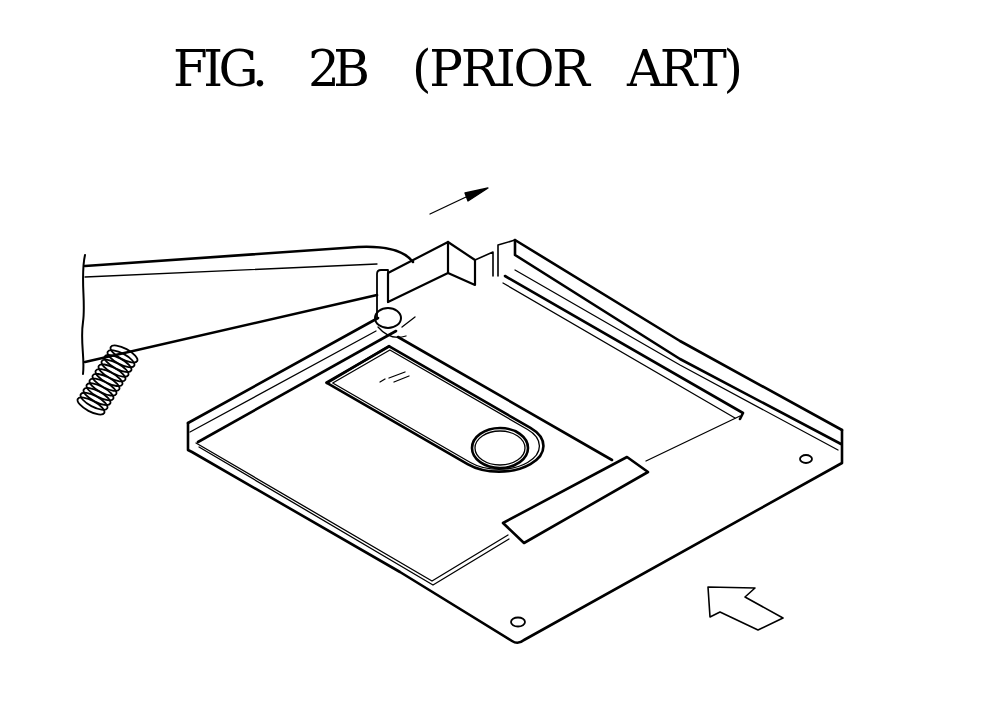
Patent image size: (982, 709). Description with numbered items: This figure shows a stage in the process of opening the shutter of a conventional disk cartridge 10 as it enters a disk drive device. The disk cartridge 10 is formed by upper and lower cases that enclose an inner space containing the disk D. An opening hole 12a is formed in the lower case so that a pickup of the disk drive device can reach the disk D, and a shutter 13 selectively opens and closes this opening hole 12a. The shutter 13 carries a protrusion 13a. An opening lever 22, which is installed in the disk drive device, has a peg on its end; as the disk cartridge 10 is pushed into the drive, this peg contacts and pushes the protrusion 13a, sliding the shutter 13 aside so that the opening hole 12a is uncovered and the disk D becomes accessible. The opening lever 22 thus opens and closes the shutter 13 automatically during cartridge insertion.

The disk cartridge 10 is at (725, 352).
The shutter 13 is at (530, 318).
The protrusion 13a is at (386, 336).
The opening hole 12a is at (350, 373).
The disk D is at (423, 412).
The opening lever 22 is at (189, 266).